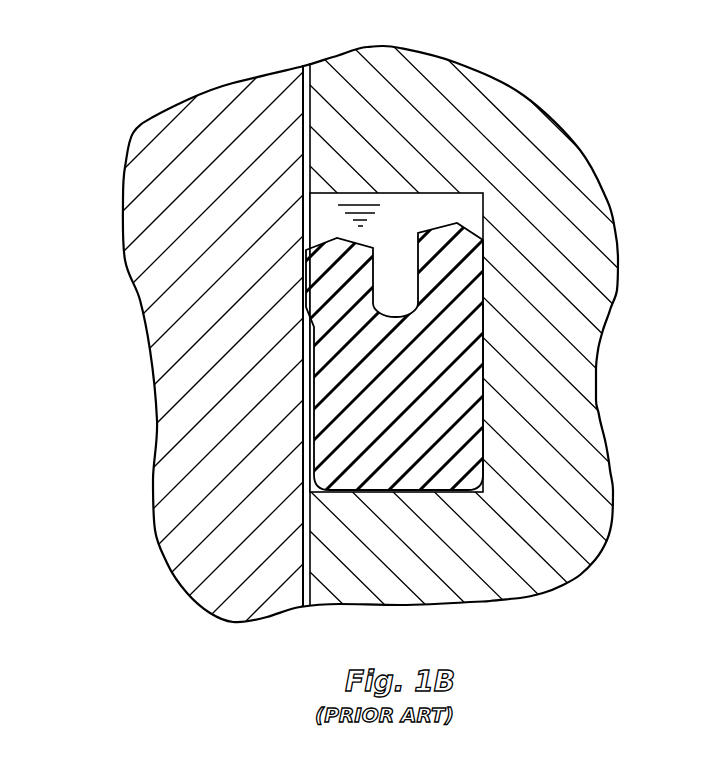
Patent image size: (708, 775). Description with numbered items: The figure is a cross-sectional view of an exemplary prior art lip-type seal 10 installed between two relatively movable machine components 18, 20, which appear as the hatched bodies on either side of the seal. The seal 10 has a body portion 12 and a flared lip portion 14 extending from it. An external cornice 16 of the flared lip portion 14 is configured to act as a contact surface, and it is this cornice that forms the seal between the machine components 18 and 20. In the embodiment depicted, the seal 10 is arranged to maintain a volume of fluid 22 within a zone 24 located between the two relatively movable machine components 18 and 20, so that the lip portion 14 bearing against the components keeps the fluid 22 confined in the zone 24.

The lip-type seal 10 is at (586, 94).
The body portion 12 is at (484, 413).
The flared lip portion 14 is at (323, 243).
The external cornice 16 is at (303, 252).
The machine component 18 is at (260, 619).
The machine component 20 is at (615, 492).
The fluid 22 is at (377, 216).
The zone 24 is at (461, 208).